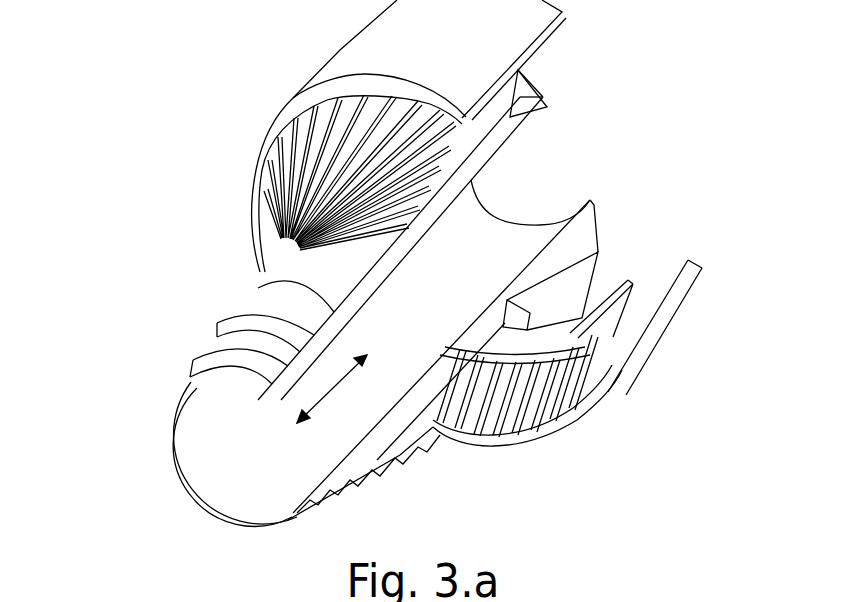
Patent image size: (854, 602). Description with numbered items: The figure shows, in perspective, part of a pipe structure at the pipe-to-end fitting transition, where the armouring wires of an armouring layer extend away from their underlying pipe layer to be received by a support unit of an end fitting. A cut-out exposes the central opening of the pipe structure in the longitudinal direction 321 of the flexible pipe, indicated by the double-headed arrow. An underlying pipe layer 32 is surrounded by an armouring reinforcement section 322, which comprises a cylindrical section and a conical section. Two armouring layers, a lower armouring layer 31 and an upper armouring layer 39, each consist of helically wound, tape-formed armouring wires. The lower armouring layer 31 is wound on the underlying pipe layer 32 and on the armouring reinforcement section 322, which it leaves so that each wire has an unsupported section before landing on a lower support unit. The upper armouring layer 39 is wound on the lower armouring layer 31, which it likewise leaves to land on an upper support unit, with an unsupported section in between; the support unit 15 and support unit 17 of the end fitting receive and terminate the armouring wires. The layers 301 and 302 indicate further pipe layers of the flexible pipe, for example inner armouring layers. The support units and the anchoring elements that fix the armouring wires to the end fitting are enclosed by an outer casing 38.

The outer casing 38 is at (370, 57).
The support unit 17 is at (492, 103).
The support unit 15 is at (485, 138).
The lower armouring layer 31 is at (293, 272).
The upper armouring layer 39 is at (302, 252).
The armouring reinforcement section 322 is at (222, 312).
The underlying pipe layer 32 is at (203, 353).
The pipe layer 302 is at (187, 390).
The pipe layer 301 is at (168, 457).
The longitudinal direction 321 is at (290, 416).